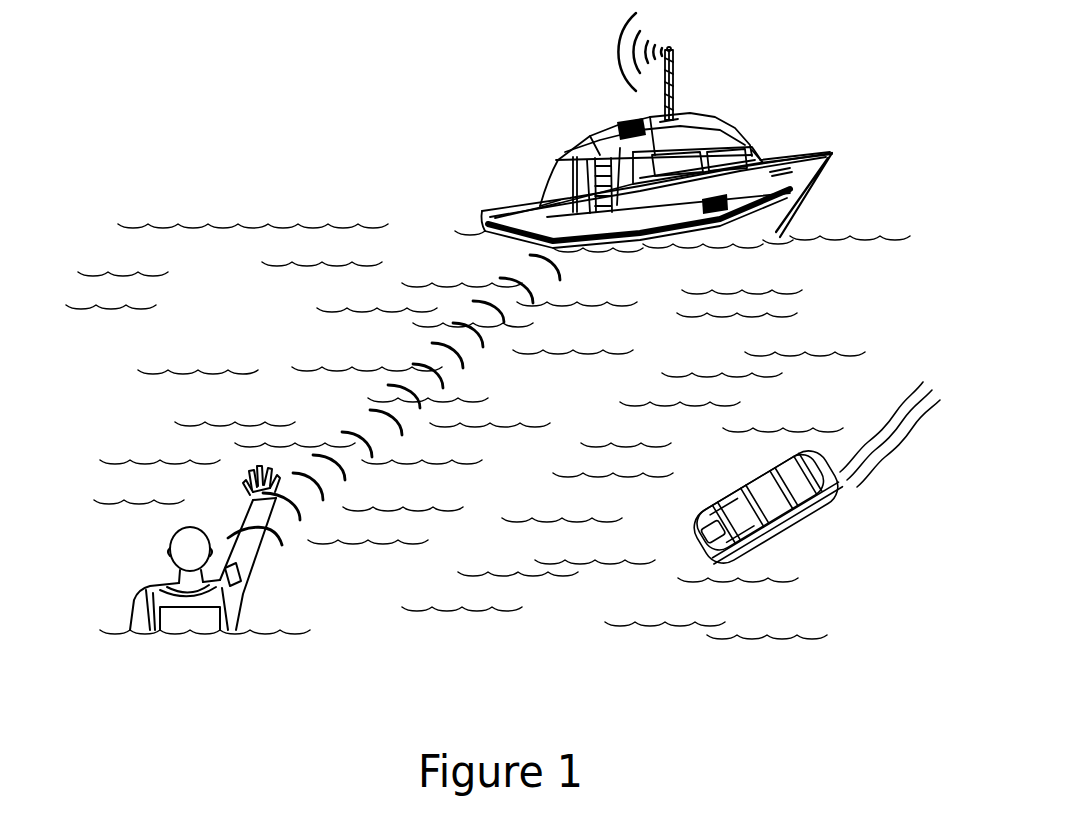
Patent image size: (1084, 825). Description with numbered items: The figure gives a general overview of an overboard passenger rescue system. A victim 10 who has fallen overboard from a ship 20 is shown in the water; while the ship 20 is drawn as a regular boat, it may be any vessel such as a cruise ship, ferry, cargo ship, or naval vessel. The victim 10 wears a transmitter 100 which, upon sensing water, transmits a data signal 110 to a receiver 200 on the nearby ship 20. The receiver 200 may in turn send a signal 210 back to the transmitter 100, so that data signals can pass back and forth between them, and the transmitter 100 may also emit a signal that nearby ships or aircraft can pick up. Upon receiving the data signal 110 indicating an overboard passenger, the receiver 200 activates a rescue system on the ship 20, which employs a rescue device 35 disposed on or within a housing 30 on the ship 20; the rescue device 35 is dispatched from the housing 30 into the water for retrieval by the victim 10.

The victim 10 is at (188, 636).
The ship 20 is at (710, 130).
The housing 30 is at (730, 203).
The rescue device 35 is at (792, 541).
The transmitter 100 is at (238, 583).
The data signal 110 is at (472, 365).
The receiver 200 is at (674, 80).
The signal 210 is at (618, 40).